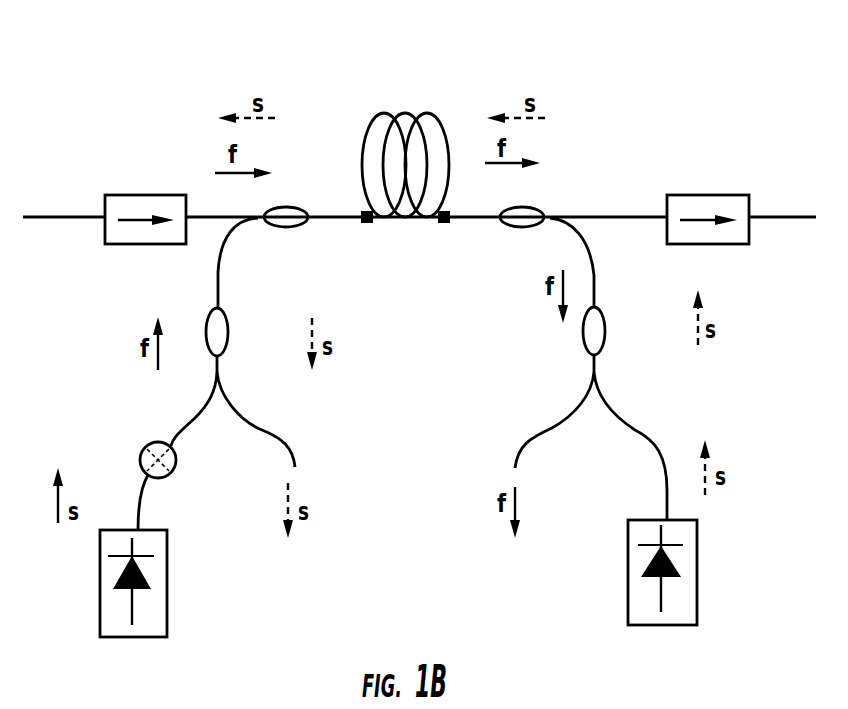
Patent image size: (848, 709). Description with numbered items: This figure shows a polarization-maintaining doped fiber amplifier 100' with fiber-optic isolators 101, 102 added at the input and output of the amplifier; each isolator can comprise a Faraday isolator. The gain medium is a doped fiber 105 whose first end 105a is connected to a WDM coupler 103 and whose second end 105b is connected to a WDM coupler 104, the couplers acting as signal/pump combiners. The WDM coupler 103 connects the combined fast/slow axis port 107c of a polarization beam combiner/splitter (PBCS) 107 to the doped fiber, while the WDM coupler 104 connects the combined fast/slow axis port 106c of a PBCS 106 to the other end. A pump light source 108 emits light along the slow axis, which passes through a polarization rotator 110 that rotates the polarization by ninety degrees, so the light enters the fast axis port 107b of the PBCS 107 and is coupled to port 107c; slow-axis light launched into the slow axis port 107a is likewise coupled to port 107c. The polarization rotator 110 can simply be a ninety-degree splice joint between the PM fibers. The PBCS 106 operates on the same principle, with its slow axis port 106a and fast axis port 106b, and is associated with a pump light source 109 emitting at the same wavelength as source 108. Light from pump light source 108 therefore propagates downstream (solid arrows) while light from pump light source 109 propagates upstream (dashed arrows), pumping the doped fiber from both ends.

The PM doped fiber amplifier 100' is at (419, 123).
The fiber-optic isolator 101 is at (137, 245).
The fiber-optic isolator 102 is at (698, 245).
The WDM coupler 103 is at (283, 228).
The WDM coupler 104 is at (523, 228).
The doped fiber 105 is at (405, 220).
The first end of the doped fiber 105a is at (364, 210).
The second end of the doped fiber 105b is at (448, 210).
The polarization beam combiner/splitter 106 is at (605, 331).
The slow axis port of the PBCS 106a is at (651, 447).
The fast axis port of the PBCS 106b is at (527, 442).
The combined fast/slow axis port of the PBCS 106c is at (615, 267).
The polarization beam combiner/splitter 107 is at (206, 334).
The slow axis port of the PBCS 107a is at (286, 442).
The fast axis port of the PBCS 107b is at (182, 432).
The combined fast/slow axis port of the PBCS 107c is at (218, 282).
The pump light source 108 is at (143, 638).
The pump light source 109 is at (670, 626).
The polarization rotator 110 is at (176, 471).